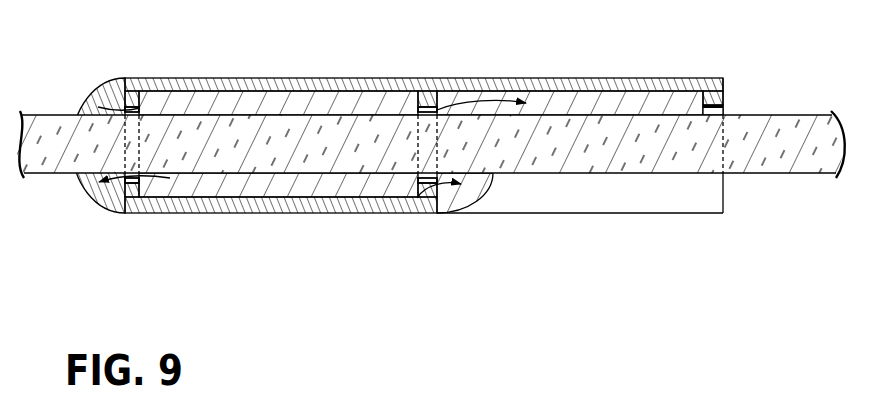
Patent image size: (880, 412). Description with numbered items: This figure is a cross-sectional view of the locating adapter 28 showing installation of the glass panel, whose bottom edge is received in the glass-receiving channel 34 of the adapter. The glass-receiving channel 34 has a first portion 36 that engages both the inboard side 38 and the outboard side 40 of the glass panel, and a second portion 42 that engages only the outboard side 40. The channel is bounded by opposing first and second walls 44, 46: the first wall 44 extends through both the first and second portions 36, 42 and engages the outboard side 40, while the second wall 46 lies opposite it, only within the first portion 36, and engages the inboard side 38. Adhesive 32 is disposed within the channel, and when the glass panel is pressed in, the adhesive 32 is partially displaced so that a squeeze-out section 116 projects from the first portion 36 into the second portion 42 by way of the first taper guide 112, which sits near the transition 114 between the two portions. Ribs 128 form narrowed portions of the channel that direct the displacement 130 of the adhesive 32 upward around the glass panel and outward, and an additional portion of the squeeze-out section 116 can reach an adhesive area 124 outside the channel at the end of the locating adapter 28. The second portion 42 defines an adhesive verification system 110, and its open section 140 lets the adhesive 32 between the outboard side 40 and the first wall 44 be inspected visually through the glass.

The locating adapter 28 is at (706, 71).
The adhesive 32 is at (227, 187).
The glass-receiving channel 34 is at (170, 205).
The first portion 36 is at (241, 76).
The inboard side 38 is at (762, 174).
The outboard side 40 is at (762, 113).
The second portion 42 is at (691, 184).
The first wall 44 is at (348, 92).
The second wall 46 is at (357, 208).
The adhesive verification system 110 is at (606, 189).
The first taper guide 112 is at (434, 197).
The transition 114 is at (414, 129).
The squeeze-out section 116 is at (600, 108).
The adhesive area 124 is at (67, 99).
The ribs 128 is at (435, 104).
The displacement 130 is at (98, 104).
The open section 140 is at (526, 186).